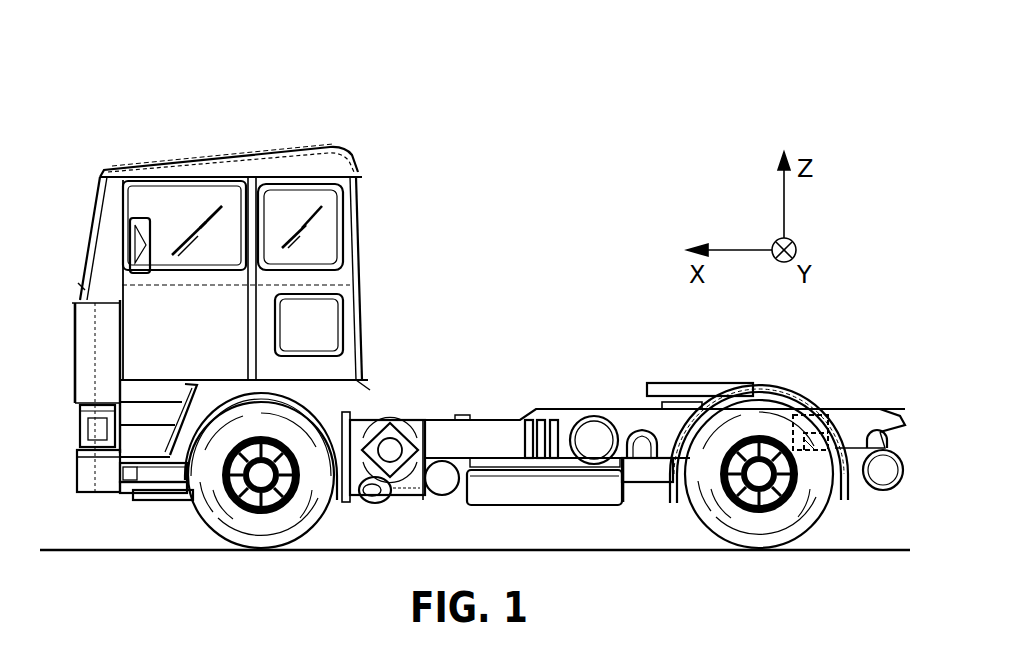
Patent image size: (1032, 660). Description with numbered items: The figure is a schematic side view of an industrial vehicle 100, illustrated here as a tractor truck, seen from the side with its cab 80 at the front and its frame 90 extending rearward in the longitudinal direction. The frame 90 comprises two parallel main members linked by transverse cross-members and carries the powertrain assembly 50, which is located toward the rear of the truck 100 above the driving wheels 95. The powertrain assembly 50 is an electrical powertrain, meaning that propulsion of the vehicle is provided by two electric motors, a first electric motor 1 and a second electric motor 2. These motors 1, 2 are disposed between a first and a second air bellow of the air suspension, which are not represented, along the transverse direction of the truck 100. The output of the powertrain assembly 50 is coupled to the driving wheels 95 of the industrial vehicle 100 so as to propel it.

The industrial vehicle 100 is at (330, 133).
The cab 80 is at (318, 287).
The frame 90 is at (626, 420).
The driving wheels 95 is at (758, 533).
The powertrain assembly 50 is at (833, 370).
The first electric motor 1 is at (820, 424).
The second electric motor 2 is at (810, 445).